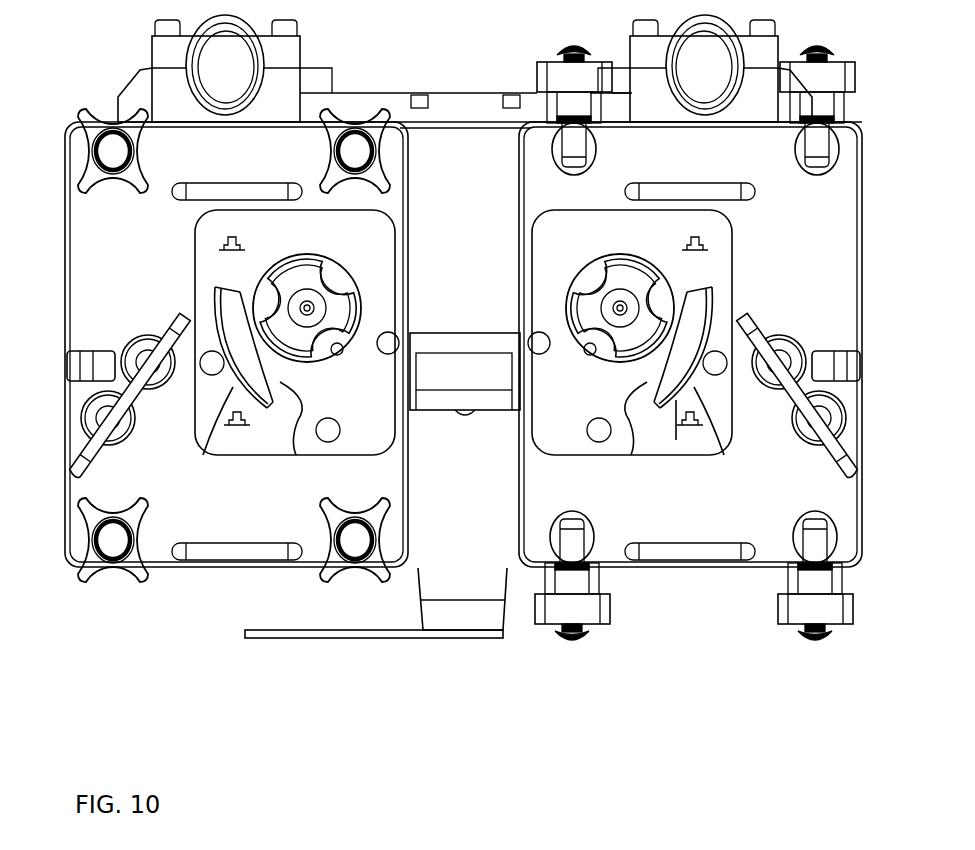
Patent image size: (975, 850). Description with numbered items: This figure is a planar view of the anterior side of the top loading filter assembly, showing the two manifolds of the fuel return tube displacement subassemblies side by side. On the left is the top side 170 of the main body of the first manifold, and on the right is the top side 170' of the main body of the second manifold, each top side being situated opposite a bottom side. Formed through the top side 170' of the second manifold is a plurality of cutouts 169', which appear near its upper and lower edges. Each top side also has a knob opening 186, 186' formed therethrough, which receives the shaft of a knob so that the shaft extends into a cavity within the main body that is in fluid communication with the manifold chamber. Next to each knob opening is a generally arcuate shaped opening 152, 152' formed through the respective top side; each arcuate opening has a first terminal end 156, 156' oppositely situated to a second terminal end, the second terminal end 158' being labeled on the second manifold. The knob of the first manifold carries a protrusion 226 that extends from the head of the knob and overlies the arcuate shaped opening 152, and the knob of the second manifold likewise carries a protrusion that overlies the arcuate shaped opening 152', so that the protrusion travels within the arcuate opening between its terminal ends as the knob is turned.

The top side 170 is at (208, 345).
The top side 170' is at (724, 344).
The knob opening 186 is at (302, 442).
The knob opening 186' is at (686, 280).
The first terminal end 156 is at (207, 319).
The first terminal end 156' is at (733, 327).
The arcuate shaped opening 152 is at (183, 515).
The arcuate shaped opening 152' is at (730, 423).
The protrusion 226 is at (305, 428).
The second terminal end 158' is at (673, 442).
The cutouts 169' is at (848, 343).